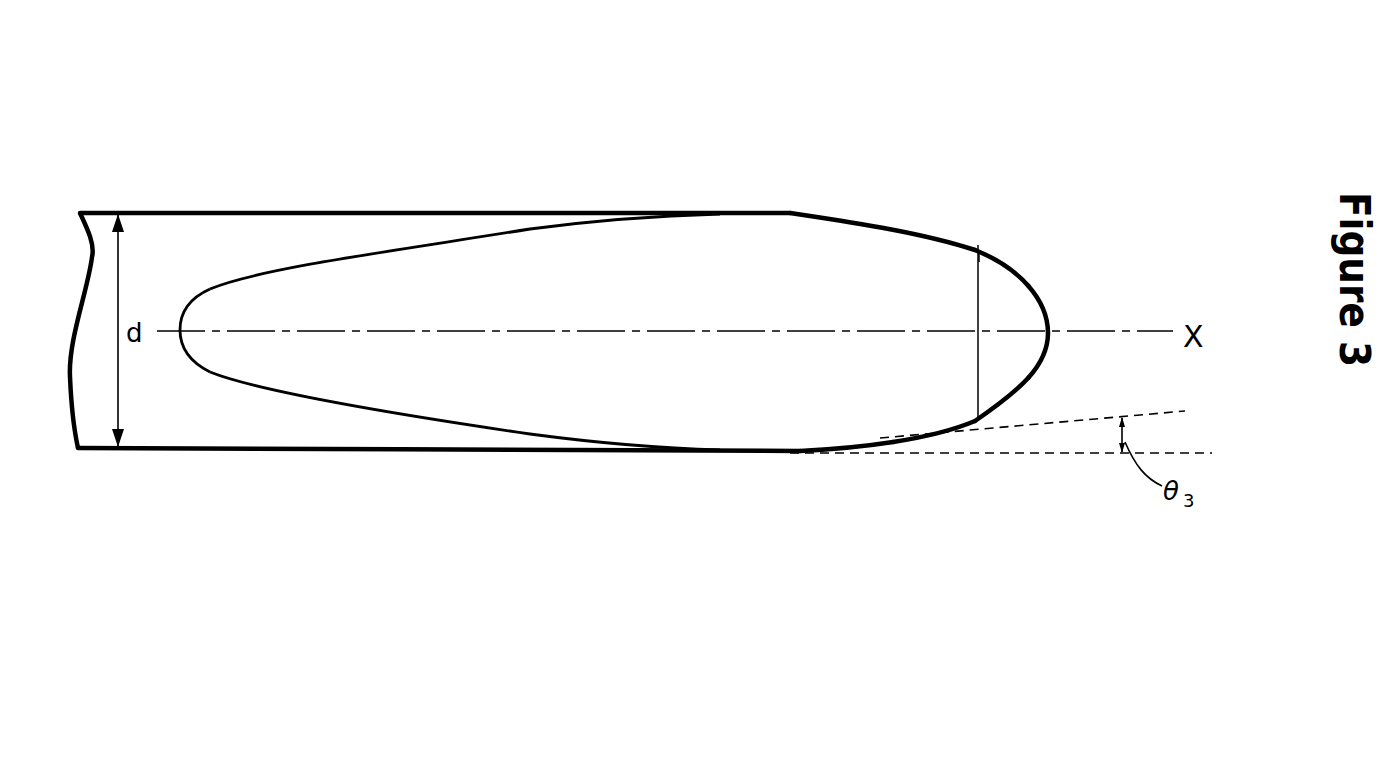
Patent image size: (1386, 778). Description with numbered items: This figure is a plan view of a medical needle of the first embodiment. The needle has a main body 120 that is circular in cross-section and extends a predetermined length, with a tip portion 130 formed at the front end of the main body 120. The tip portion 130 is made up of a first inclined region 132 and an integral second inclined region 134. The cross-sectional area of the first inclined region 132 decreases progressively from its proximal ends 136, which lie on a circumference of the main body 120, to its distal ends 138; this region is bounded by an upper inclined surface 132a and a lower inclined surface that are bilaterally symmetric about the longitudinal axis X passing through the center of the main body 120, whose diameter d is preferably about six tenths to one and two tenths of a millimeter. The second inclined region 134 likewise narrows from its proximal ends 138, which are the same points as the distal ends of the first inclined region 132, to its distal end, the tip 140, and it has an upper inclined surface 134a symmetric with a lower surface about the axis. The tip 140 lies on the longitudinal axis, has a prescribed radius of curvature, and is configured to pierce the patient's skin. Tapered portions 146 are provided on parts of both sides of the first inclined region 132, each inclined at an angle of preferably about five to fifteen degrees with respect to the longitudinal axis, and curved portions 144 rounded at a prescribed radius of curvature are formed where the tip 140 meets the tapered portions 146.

The main body 120 is at (195, 238).
The tip portion 130 is at (727, 107).
The first inclined region 132 is at (800, 204).
The upper inclined surface 132a is at (523, 252).
The second inclined region 134 is at (1030, 255).
The upper inclined surface 134a is at (987, 270).
The proximal ends 136 is at (180, 331).
The distal ends 138 is at (977, 400).
The tip 140 is at (1050, 326).
The curved portions 144 is at (978, 247).
The tapered portions 146 is at (880, 443).